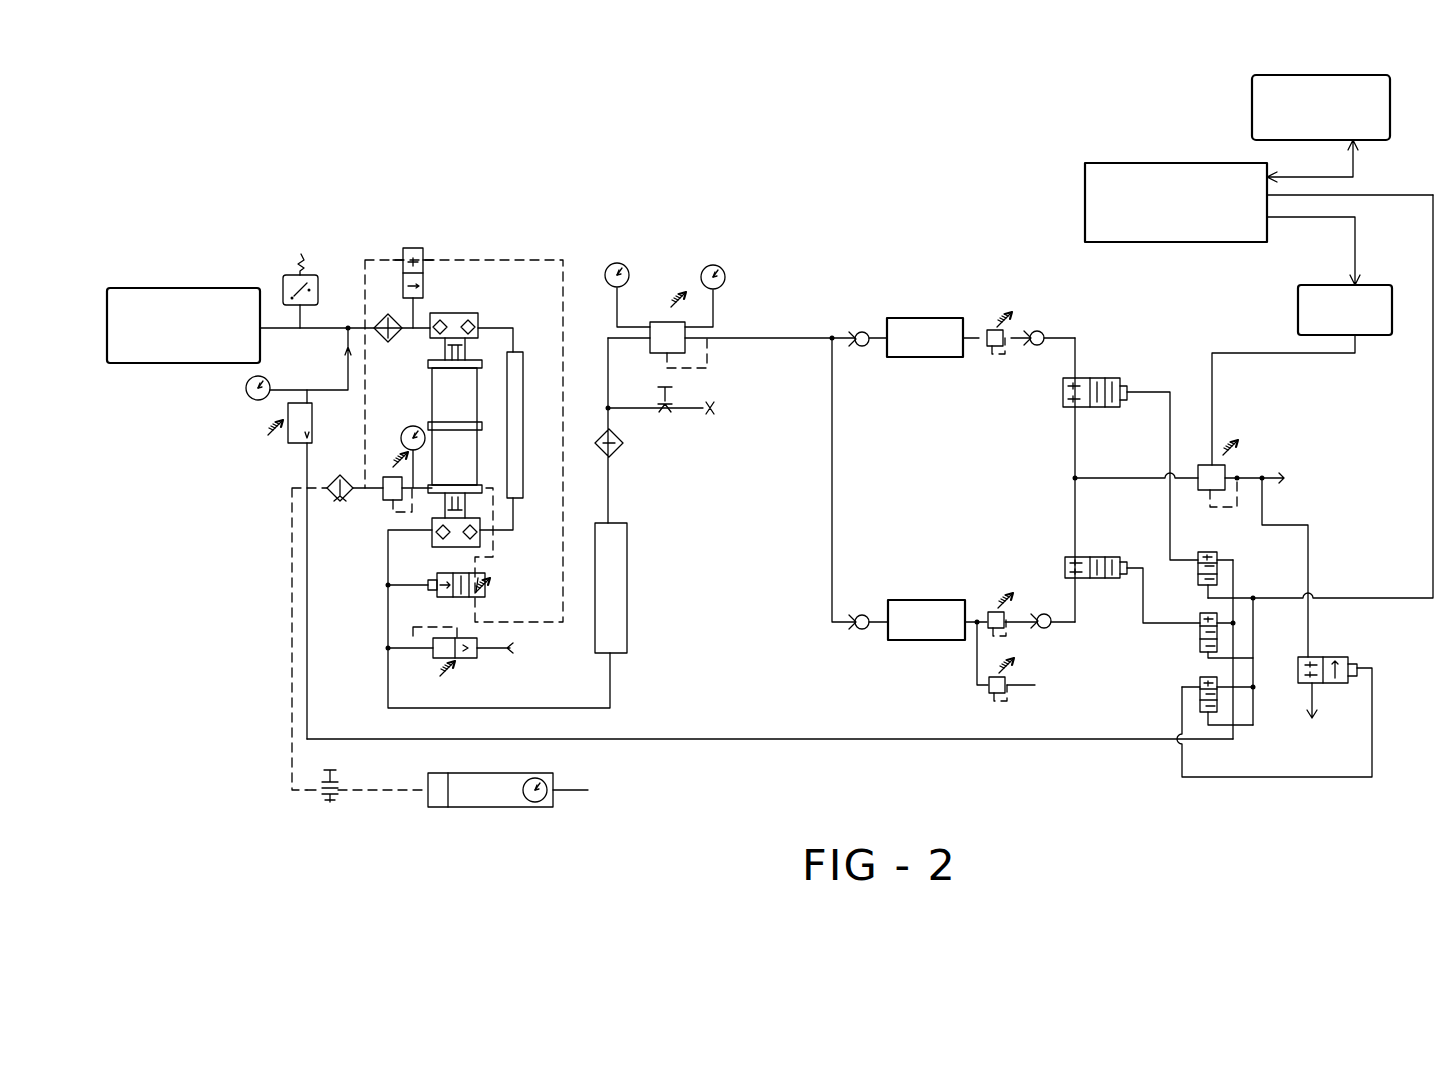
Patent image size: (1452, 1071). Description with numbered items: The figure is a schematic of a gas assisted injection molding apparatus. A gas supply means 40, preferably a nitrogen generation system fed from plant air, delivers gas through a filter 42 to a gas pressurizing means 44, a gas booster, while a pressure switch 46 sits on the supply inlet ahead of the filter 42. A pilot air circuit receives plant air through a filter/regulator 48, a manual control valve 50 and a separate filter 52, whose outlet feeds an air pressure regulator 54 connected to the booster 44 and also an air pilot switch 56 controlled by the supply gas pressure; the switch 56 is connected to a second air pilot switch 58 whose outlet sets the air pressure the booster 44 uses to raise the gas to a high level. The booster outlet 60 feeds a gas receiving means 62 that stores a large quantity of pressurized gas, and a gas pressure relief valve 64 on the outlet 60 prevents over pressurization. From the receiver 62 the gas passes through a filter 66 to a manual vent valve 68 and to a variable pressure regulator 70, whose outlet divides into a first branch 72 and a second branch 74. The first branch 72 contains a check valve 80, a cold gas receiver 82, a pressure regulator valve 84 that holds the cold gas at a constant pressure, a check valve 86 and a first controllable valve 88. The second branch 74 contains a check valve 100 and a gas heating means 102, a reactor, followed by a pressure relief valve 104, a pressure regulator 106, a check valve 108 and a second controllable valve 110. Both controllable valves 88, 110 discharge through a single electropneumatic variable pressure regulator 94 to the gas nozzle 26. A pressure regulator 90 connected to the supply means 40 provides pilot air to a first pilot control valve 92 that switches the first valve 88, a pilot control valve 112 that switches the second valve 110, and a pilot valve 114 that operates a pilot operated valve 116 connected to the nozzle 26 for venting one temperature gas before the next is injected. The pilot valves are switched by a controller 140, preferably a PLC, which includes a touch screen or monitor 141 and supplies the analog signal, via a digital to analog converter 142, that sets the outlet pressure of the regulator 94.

The gas supply means 40 is at (157, 288).
The filter 42 is at (385, 315).
The gas pressurizing means 44 is at (432, 391).
The pressure switch 46 is at (283, 278).
The filter/regulator 48 is at (490, 807).
The manual control valve 50 is at (330, 802).
The filter 52 is at (327, 495).
The air pressure regulator 54 is at (383, 475).
The air pilot switch 56 is at (403, 248).
The second air pilot switch 58 is at (490, 577).
The outlet 60 is at (458, 540).
The gas receiving means 62 is at (620, 633).
The gas pressure relief valve 64 is at (470, 655).
The filter 66 is at (618, 455).
The manual vent valve 68 is at (688, 413).
The variable pressure regulator 70 is at (655, 322).
The first branch 72 is at (853, 335).
The second branch 74 is at (832, 578).
The check valve 80 is at (860, 350).
The gas receiver 82 is at (933, 357).
The pressure regulator valve 84 is at (987, 330).
The check valve 86 is at (1036, 330).
The first controllable valve 88 is at (1112, 380).
The pressure regulator 90 is at (288, 435).
The first pilot control valve 92 is at (1217, 550).
The variable pressure regulator 94 is at (1228, 468).
The gas nozzle 26 is at (1322, 478).
The check valve 100 is at (860, 633).
The gas heating means 102 is at (925, 640).
The pressure relief valve 104 is at (1005, 695).
The pressure regulator 106 is at (990, 612).
The check valve 108 is at (1046, 630).
The second controllable valve 110 is at (1065, 560).
The pilot control valve 112 is at (1200, 645).
The pilot valve 114 is at (1200, 711).
The pilot operated valve 116 is at (1325, 657).
The controller 140 is at (1157, 135).
The touch screen or monitor 141 is at (1252, 81).
The D/A converter 142 is at (1318, 285).